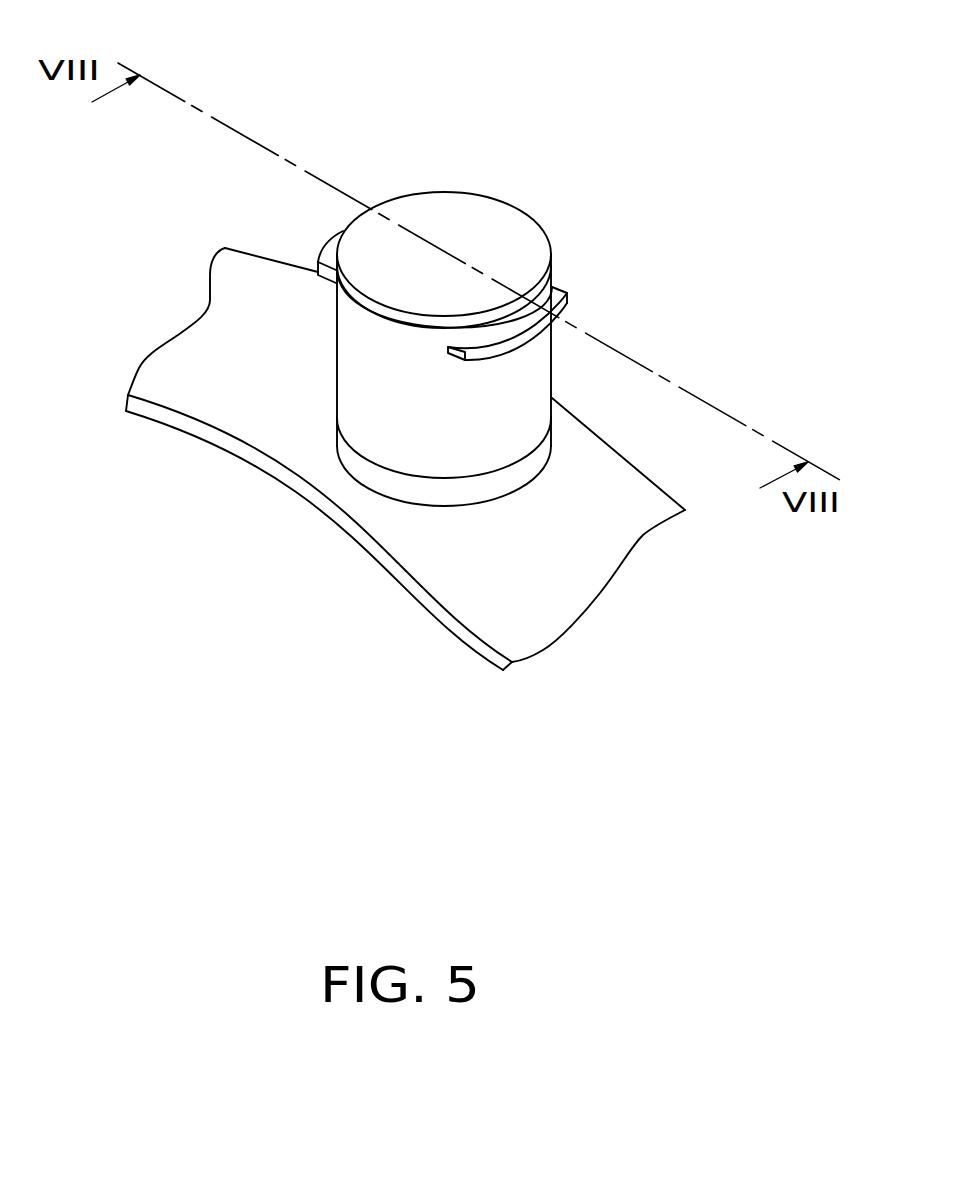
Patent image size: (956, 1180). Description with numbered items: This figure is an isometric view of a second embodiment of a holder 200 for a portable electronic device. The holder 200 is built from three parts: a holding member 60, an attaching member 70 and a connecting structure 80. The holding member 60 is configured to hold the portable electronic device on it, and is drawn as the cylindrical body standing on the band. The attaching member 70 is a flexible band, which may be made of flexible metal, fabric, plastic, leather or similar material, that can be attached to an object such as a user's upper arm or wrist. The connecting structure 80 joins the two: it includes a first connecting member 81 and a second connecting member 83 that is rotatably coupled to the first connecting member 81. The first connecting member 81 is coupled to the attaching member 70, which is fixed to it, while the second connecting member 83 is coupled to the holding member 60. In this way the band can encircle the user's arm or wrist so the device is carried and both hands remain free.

The holder 200 is at (527, 59).
The holding member 60 is at (497, 253).
The attaching member 70 is at (512, 615).
The connecting structure 80 is at (198, 559).
The first connecting member 81 is at (408, 487).
The second connecting member 83 is at (354, 381).